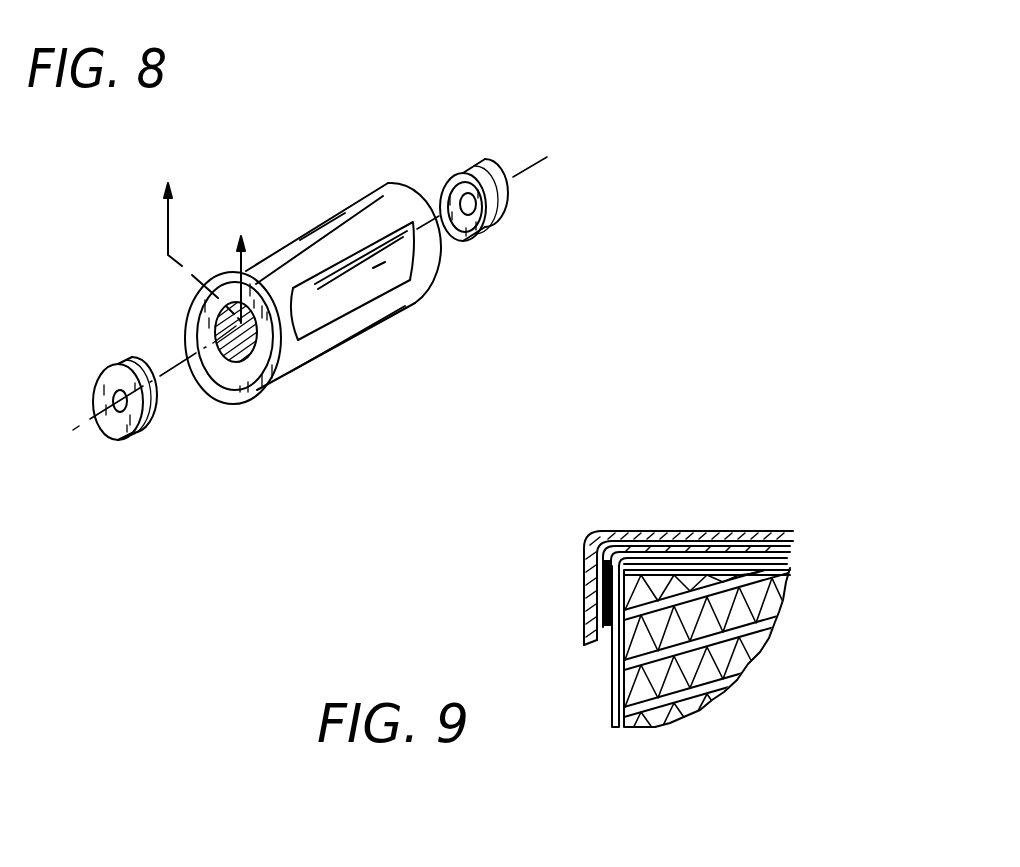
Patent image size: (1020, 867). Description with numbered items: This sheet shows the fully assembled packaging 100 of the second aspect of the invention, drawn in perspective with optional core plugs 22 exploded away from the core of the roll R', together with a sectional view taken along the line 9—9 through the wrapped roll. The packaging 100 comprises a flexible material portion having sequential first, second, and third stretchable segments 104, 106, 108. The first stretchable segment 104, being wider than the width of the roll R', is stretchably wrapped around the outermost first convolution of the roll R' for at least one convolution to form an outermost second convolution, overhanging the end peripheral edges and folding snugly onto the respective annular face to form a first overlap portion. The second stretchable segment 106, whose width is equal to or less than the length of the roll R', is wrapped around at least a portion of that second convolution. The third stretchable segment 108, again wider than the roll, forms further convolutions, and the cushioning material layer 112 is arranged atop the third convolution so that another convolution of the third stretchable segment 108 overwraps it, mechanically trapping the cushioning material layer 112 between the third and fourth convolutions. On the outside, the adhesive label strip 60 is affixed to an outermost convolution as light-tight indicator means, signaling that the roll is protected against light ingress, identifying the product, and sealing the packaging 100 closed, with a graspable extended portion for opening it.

In FIG. 8, the packaging 100 is at (386, 148).
In FIG. 9, the packaging 100 is at (768, 410).
In FIG. 8, the section line 9— 9 is at (204, 250).
In FIG. 8, the adhesive label strip 60 is at (424, 277).
In FIG. 8, the roll R' is at (352, 311).
In FIG. 8, the end bushing / spline member 22 is at (132, 428).
In FIG. 9, the end bushing / spline member 22 is at (611, 698).
In FIG. 9, the cushioning material layer 112 is at (641, 543).
In FIG. 9, the third stretchable segment 108 is at (700, 550).
In FIG. 9, the second stretchable segment 106 is at (765, 533).
In FIG. 9, the first stretchable segment 104 is at (790, 575).